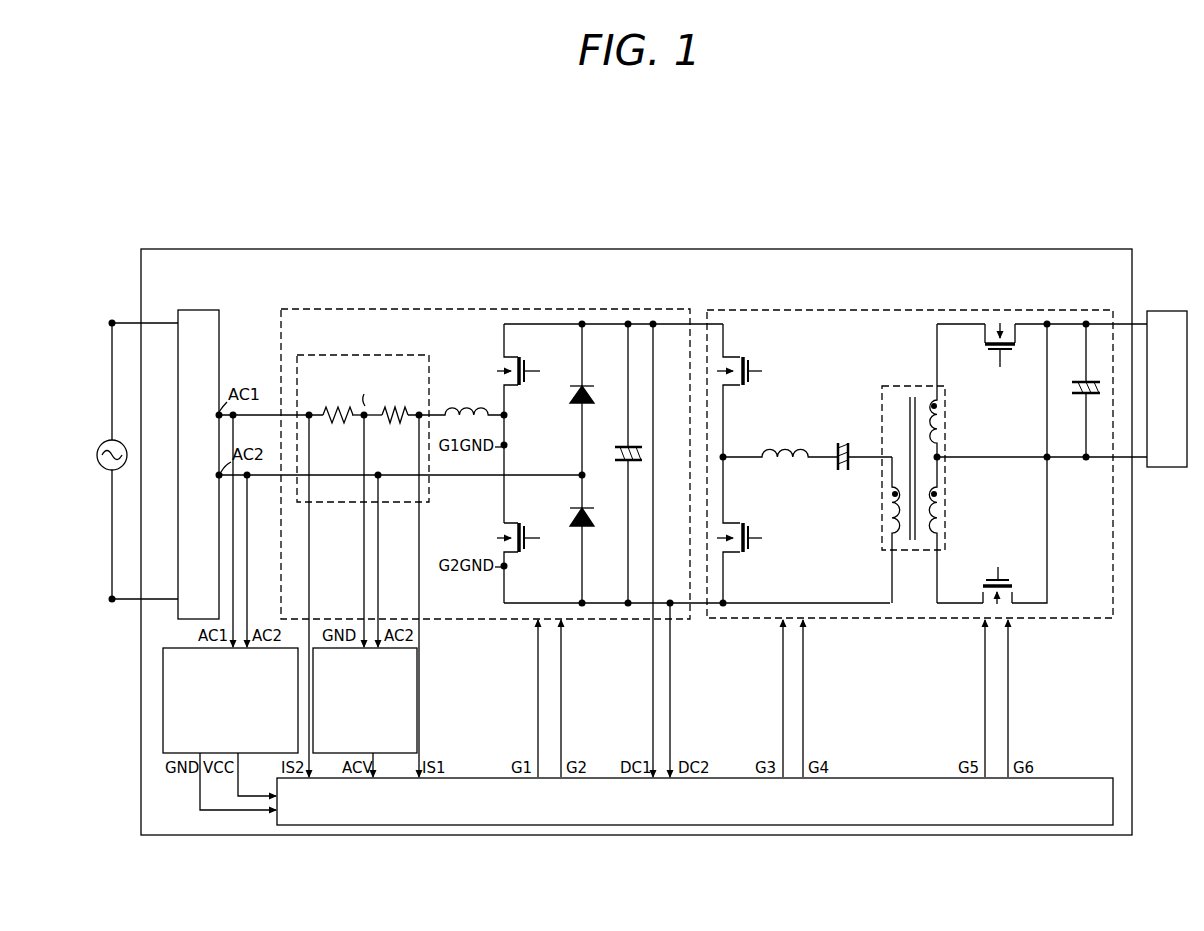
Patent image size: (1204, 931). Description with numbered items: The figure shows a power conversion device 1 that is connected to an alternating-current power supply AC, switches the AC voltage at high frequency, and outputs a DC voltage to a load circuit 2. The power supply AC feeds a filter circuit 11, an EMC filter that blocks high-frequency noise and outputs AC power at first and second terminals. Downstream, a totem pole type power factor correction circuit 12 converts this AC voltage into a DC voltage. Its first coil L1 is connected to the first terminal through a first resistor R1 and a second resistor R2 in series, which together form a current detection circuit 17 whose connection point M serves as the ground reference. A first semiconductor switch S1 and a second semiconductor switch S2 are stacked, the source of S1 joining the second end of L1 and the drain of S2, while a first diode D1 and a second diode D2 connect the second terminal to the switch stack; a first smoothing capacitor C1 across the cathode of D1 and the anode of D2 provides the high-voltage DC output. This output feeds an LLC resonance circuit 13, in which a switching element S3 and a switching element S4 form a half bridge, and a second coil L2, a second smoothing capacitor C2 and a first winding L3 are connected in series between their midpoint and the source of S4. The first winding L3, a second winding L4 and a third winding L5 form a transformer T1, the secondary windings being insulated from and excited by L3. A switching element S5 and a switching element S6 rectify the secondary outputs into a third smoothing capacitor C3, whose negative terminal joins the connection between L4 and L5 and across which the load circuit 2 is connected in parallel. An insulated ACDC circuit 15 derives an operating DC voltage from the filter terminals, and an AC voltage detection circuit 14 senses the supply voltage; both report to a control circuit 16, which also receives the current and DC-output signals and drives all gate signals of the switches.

The power conversion device 1 is at (247, 249).
The load circuit 2 is at (1170, 311).
The filter circuit 11 is at (200, 310).
The totem pole type power factor correction circuit 12 is at (365, 309).
The LLC resonance circuit 13 is at (797, 310).
The AC voltage detection circuit 14 is at (417, 688).
The insulated ACDC circuit 15 is at (163, 688).
The control circuit 16 is at (1097, 778).
The current detection circuit 17 is at (363, 408).
The alternating-current power supply AC is at (106, 441).
The first semiconductor switch S1 is at (531, 358).
The second semiconductor switch S2 is at (531, 526).
The switching element S3 is at (754, 360).
The switching element S4 is at (754, 527).
The switching element S5 is at (988, 577).
The switching element S6 is at (1010, 352).
The first diode D1 is at (578, 407).
The second diode D2 is at (589, 528).
The first smoothing capacitor C1 is at (624, 445).
The second smoothing capacitor C2 is at (851, 443).
The third smoothing capacitor C3 is at (1078, 380).
The first coil L1 is at (464, 400).
The second coil L2 is at (792, 445).
The first winding L3 is at (886, 517).
The second winding L4 is at (942, 514).
The third winding L5 is at (942, 421).
The first resistor R1 is at (395, 406).
The second resistor R2 is at (337, 406).
The transformer T1 is at (912, 463).